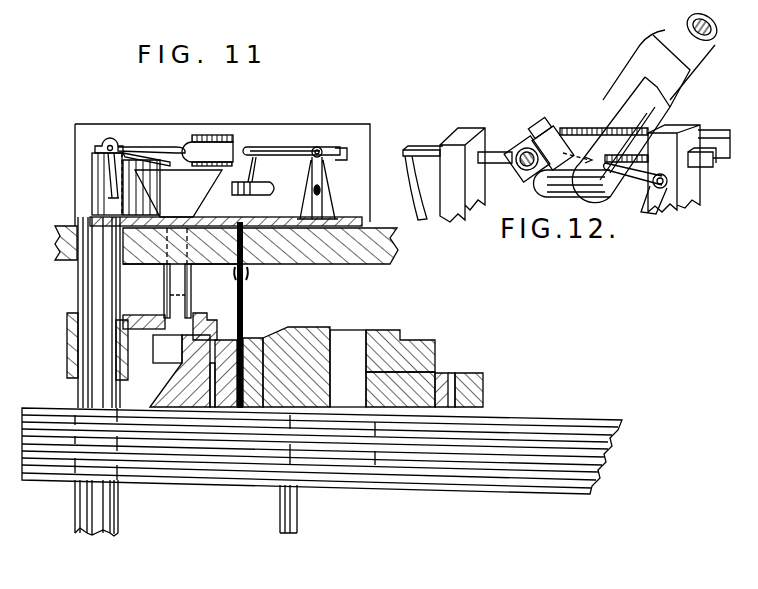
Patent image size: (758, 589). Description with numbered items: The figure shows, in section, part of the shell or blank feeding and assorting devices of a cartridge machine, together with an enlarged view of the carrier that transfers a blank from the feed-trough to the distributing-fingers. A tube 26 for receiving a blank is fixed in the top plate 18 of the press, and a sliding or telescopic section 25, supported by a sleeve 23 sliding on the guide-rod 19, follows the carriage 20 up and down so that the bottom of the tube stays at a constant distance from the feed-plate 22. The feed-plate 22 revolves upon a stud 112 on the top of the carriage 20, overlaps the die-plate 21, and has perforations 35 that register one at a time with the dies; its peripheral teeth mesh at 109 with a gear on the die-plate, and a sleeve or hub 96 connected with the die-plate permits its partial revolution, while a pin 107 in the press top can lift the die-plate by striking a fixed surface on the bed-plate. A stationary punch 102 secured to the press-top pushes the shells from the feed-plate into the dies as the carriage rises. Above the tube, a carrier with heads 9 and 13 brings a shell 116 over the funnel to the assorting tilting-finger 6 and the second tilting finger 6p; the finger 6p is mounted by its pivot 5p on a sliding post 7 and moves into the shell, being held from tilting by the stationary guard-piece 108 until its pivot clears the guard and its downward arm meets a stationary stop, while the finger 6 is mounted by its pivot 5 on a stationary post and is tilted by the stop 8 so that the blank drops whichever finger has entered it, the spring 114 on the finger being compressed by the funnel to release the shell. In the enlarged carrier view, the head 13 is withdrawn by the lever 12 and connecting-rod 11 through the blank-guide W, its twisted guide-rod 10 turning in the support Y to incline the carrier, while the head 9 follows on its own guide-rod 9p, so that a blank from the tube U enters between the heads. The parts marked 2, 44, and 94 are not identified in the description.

In FIG. 12, the support block 2 is at (462, 175).
In FIG. 11, the pivot 5 is at (107, 162).
In FIG. 11, the pivot 5p is at (317, 173).
In FIG. 11, the assorting tilting-finger 6 is at (151, 145).
In FIG. 11, the tilting finger 6p is at (291, 145).
In FIG. 11, the sliding post 7 is at (261, 179).
In FIG. 11, the stop 8 is at (155, 184).
In FIG. 11, the carrier head 9 is at (212, 130).
In FIG. 12, the carrier head 9 is at (519, 131).
In FIG. 12, the guide-rod 9p is at (495, 157).
In FIG. 12, the twisted guide-rod 10 is at (566, 175).
In FIG. 12, the connecting-rod 11 is at (635, 175).
In FIG. 12, the lever 12 is at (654, 200).
In FIG. 12, the carrier head 13 is at (576, 149).
In FIG. 11, the top plate of the press 18 is at (226, 240).
In FIG. 11, the guide-rod 19 is at (97, 376).
In FIG. 11, the carriage 20 is at (322, 451).
In FIG. 11, the die-plate 21 is at (400, 368).
In FIG. 11, the feed-plate 22 is at (167, 349).
In FIG. 11, the sleeve 23 is at (144, 315).
In FIG. 11, the telescopic tube section 25 is at (164, 288).
In FIG. 11, the feed tube 26 is at (178, 193).
In FIG. 11, the perforations 35 is at (195, 326).
In FIG. 11, the hatched block 44 is at (248, 377).
In FIG. 11, the clamp 94 is at (466, 373).
In FIG. 11, the sleeve or hub 96 is at (348, 368).
In FIG. 11, the stationary punch 102 is at (245, 294).
In FIG. 11, the pin 107 is at (302, 509).
In FIG. 11, the guard-piece 108 is at (347, 155).
In FIG. 11, the meshing teeth 109 is at (255, 340).
In FIG. 11, the stud 112 is at (193, 371).
In FIG. 11, the spring 114 is at (155, 162).
In FIG. 11, the shell 116 is at (207, 150).
In FIG. 12, the blank-guide W is at (625, 116).
In FIG. 12, the tube U is at (699, 42).
In FIG. 12, the support Y is at (674, 168).